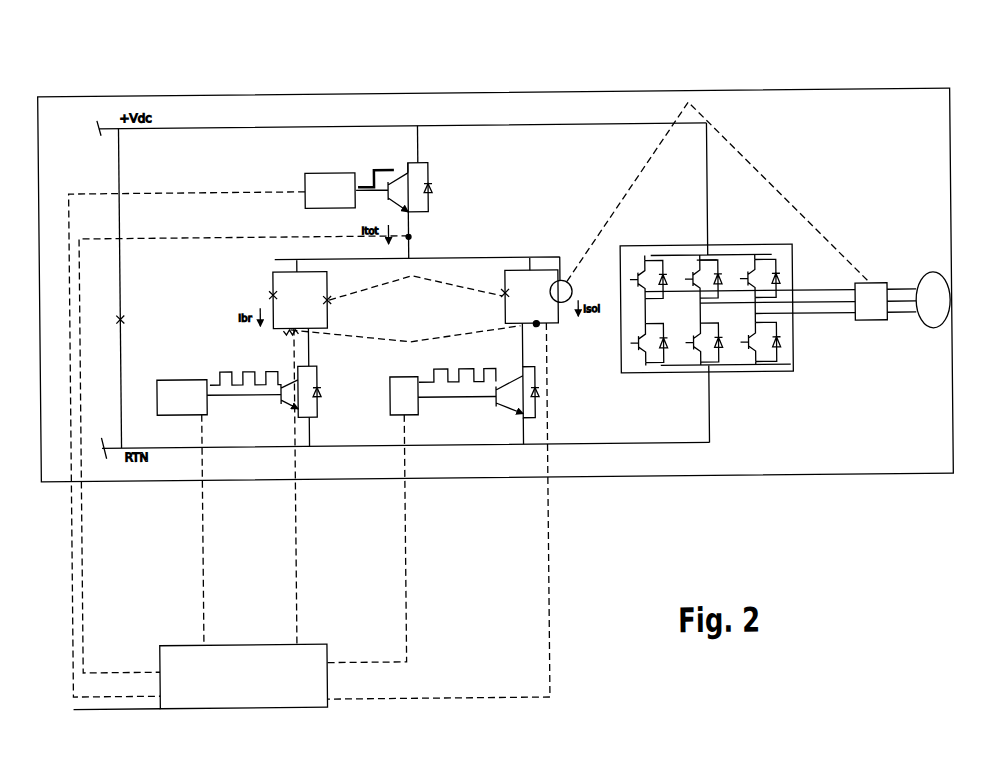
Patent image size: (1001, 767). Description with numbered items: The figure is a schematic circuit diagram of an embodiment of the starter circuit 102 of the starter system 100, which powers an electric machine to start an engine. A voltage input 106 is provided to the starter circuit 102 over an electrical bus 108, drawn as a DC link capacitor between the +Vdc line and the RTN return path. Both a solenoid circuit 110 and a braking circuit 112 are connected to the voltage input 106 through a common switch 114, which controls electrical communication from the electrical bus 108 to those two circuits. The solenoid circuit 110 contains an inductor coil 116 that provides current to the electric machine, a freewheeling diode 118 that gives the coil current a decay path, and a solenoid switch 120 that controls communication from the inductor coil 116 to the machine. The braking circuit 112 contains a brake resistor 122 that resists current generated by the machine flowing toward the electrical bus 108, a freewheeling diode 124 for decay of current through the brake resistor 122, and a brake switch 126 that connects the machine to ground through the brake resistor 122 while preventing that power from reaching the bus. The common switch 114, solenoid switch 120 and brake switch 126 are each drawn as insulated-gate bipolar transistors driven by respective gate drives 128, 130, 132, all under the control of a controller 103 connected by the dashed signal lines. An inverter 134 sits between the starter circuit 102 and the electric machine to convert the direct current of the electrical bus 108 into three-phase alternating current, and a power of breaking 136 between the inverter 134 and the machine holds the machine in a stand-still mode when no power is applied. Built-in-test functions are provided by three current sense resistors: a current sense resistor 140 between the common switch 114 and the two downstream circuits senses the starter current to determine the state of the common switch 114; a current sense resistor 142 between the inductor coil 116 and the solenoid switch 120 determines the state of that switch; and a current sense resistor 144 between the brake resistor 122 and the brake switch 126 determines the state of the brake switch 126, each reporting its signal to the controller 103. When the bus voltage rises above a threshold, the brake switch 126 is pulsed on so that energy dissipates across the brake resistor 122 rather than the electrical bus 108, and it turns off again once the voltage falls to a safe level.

The starter system 100 is at (58, 88).
The starter circuit 102 is at (364, 170).
The controller 103 is at (176, 642).
The voltage input 106 is at (118, 310).
The electrical bus 108 is at (930, 332).
The solenoid circuit 110 is at (530, 257).
The braking circuit 112 is at (298, 265).
The common switch 114 is at (430, 171).
The inductor coil 116 is at (571, 289).
The freewheeling diode 118 is at (503, 293).
The solenoid switch 120 is at (536, 380).
The brake resistor 122 is at (271, 307).
The freewheeling diode 124 is at (331, 305).
The brake switch 126 is at (318, 375).
The gate drive 128 is at (321, 171).
The gate drive 130 is at (403, 376).
The gate drive 132 is at (172, 377).
The inverter 134 is at (656, 247).
The power of breaking 136 is at (862, 325).
The current sense resistor 140 is at (411, 235).
The current sense resistor 142 is at (537, 320).
The current sense resistor 144 is at (293, 333).